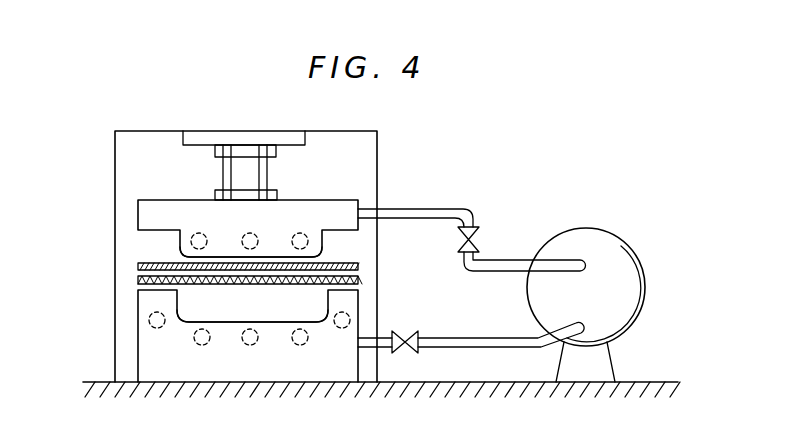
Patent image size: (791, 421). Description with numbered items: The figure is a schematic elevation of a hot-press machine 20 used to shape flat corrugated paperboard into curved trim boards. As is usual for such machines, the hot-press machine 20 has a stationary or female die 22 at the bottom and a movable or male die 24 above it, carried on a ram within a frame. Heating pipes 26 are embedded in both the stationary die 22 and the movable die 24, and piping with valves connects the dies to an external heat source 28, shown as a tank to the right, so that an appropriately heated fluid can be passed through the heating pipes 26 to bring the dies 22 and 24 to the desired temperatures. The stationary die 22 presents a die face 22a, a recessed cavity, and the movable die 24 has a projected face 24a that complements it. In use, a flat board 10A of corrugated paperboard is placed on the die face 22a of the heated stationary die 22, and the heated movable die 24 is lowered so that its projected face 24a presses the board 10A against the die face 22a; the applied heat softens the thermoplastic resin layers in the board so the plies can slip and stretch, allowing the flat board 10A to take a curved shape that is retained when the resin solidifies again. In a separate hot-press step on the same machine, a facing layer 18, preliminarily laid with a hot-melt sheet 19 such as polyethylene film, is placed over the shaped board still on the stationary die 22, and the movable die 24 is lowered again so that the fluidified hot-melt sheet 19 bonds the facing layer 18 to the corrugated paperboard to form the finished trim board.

The flat board of corrugated paperboard 10A is at (358, 280).
The facing layer 18 is at (328, 262).
The hot-melt sheet 19 is at (360, 276).
The hot-press machine 20 is at (388, 191).
The stationary die 22 is at (160, 351).
The die face 22a is at (262, 314).
The movable die 24 is at (166, 222).
The projected face 24a is at (223, 257).
The heating pipes 26 is at (305, 235).
The external heat source 28 is at (622, 258).